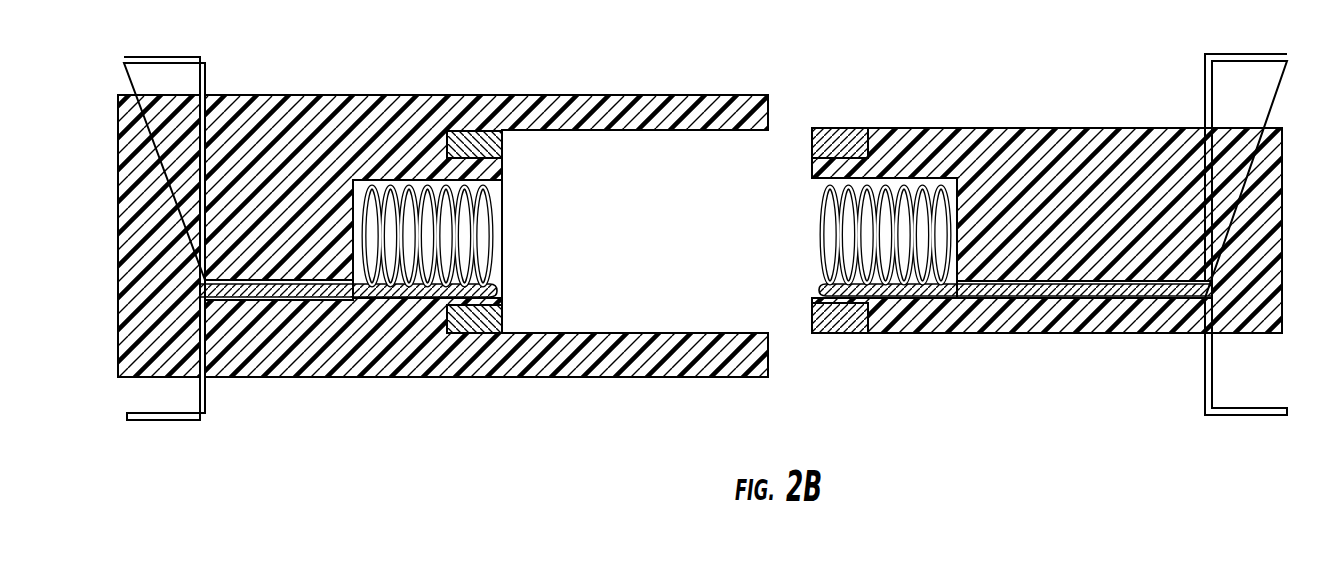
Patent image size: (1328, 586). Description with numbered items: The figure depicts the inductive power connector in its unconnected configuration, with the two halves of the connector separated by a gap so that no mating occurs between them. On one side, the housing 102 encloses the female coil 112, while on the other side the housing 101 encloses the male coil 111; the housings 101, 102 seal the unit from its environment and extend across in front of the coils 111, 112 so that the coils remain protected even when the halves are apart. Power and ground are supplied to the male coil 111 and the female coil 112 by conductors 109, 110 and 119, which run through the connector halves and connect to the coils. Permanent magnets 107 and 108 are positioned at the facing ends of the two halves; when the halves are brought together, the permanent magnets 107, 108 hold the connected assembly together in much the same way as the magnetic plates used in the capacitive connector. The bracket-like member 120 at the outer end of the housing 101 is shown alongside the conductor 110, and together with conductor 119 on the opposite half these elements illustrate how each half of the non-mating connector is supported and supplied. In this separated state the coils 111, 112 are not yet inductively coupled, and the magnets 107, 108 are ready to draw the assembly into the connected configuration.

The housing 101 is at (1039, 116).
The housing 102 is at (436, 82).
The permanent magnet 107 is at (797, 146).
The permanent magnet 108 is at (516, 146).
The conductor 109 is at (317, 312).
The conductor 110 is at (1193, 379).
The male coil 111 is at (807, 261).
The female coil 112 is at (512, 199).
The conductor 119 is at (188, 188).
The bracket 120 is at (1194, 73).